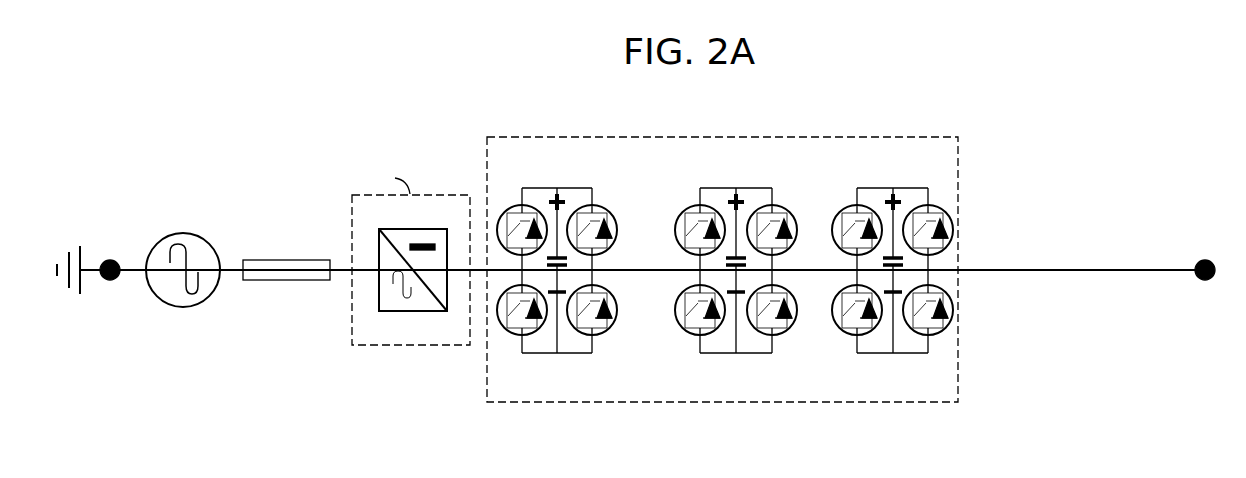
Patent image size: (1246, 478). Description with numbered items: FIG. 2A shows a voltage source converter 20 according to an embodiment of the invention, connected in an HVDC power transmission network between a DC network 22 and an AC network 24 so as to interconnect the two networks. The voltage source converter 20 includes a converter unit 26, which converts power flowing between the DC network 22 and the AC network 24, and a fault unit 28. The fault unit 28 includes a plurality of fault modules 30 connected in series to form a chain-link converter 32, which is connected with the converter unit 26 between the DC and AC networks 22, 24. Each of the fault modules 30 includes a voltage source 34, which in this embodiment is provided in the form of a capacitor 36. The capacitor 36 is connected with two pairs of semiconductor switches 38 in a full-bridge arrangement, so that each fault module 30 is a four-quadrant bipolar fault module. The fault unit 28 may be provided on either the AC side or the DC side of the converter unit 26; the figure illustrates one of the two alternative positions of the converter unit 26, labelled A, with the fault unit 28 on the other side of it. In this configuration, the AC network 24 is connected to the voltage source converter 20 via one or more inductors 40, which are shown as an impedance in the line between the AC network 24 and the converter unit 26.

The voltage source converter 20 is at (279, 168).
The DC network 22 is at (1201, 260).
The AC network 24 is at (183, 307).
The converter unit 26 is at (403, 300).
The fault unit 28 is at (884, 137).
The fault module 30 is at (557, 186).
The chain-link converter 32 is at (675, 385).
The voltage source 34 is at (893, 237).
The capacitor 36 is at (720, 268).
The semiconductor switch 38 is at (790, 328).
The inductor 40 is at (290, 260).